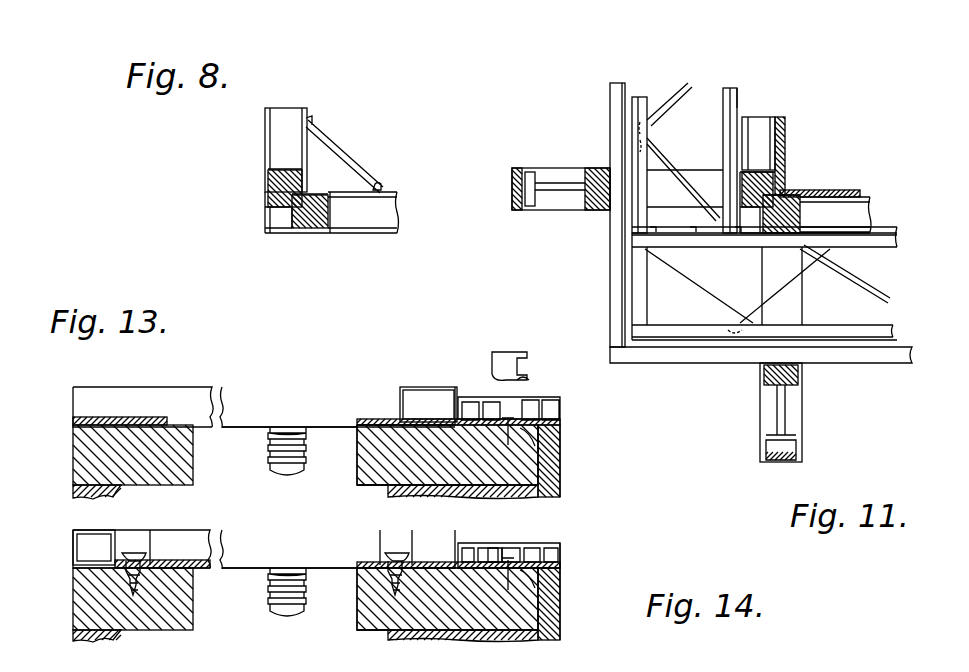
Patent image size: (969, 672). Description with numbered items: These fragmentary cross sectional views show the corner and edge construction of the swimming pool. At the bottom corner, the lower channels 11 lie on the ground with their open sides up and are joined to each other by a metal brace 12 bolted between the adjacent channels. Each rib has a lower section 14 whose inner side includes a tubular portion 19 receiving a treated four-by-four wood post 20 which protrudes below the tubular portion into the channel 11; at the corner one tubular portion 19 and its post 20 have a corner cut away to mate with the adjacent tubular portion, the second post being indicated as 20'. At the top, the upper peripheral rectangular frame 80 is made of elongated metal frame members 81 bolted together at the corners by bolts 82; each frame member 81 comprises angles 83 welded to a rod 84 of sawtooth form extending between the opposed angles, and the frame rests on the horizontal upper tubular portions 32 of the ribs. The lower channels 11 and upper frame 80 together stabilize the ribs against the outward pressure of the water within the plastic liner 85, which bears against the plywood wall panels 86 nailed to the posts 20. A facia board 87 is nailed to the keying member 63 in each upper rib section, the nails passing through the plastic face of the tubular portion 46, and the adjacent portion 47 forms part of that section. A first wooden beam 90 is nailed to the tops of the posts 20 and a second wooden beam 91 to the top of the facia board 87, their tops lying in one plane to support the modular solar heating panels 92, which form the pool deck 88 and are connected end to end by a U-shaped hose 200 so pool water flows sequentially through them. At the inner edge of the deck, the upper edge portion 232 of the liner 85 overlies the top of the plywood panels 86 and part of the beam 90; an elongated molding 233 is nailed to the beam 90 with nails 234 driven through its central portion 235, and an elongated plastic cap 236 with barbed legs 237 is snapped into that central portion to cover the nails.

In FIG. 8, the lower channel 11 is at (263, 130).
In FIG. 11, the lower channel 11 is at (760, 117).
In FIG. 8, the metal brace 12 is at (342, 152).
In FIG. 8, the lower section 14 is at (282, 235).
In FIG. 8, the tubular portion 19 is at (272, 170).
In FIG. 11, the tubular portion 19 is at (756, 168).
In FIG. 8, the wood post 20 is at (304, 237).
In FIG. 11, the wood post 20 is at (812, 187).
In FIG. 13, the wood post 20 is at (356, 467).
In FIG. 14, the wood post 20 is at (356, 607).
In FIG. 8, the elastomeric block 20' is at (242, 188).
In FIG. 11, the elastomeric block 20' is at (798, 164).
In FIG. 11, the horizontal upper tubular portion 32 is at (700, 174).
In FIG. 11, the tubular portion 46 is at (576, 210).
In FIG. 11, the bracket end plate 47 is at (540, 210).
In FIG. 11, the keying member 63 is at (596, 164).
In FIG. 11, the upper peripheral rectangular frame 80 is at (730, 88).
In FIG. 11, the frame member 81 is at (734, 90).
In FIG. 11, the bolt 82 is at (678, 242).
In FIG. 11, the angle 83 is at (651, 98).
In FIG. 11, the rod 84 is at (682, 82).
In FIG. 11, the plastic liner 85 is at (786, 138).
In FIG. 13, the plastic liner 85 is at (560, 478).
In FIG. 14, the plastic liner 85 is at (560, 619).
In FIG. 11, the plywood wall panel 86 is at (786, 128).
In FIG. 13, the plywood wall panel 86 is at (550, 490).
In FIG. 14, the plywood wall panel 86 is at (550, 632).
In FIG. 11, the facia board 87 is at (610, 105).
In FIG. 13, the facia board 87 is at (73, 489).
In FIG. 14, the facia board 87 is at (73, 631).
In FIG. 13, the pool deck 88 is at (378, 366).
In FIG. 13, the first wooden beam 90 is at (357, 472).
In FIG. 14, the first wooden beam 90 is at (357, 609).
In FIG. 13, the second wooden beam 91 is at (73, 450).
In FIG. 14, the second wooden beam 91 is at (73, 590).
In FIG. 13, the solar heating panel 92 is at (248, 384).
In FIG. 14, the solar heating panel 92 is at (246, 527).
In FIG. 13, the U-shaped hose 200 is at (269, 456).
In FIG. 14, the U-shaped hose 200 is at (269, 608).
In FIG. 13, the upper edge portion 232 is at (540, 432).
In FIG. 14, the upper edge portion 232 is at (540, 574).
In FIG. 13, the molding 233 is at (470, 388).
In FIG. 14, the molding 233 is at (462, 540).
In FIG. 13, the nail 234 is at (506, 437).
In FIG. 14, the nail 234 is at (508, 586).
In FIG. 13, the central portion 235 is at (532, 430).
In FIG. 14, the central portion 235 is at (532, 572).
In FIG. 13, the plastic cap 236 is at (506, 350).
In FIG. 14, the plastic cap 236 is at (506, 546).
In FIG. 13, the barbed leg 237 is at (530, 374).